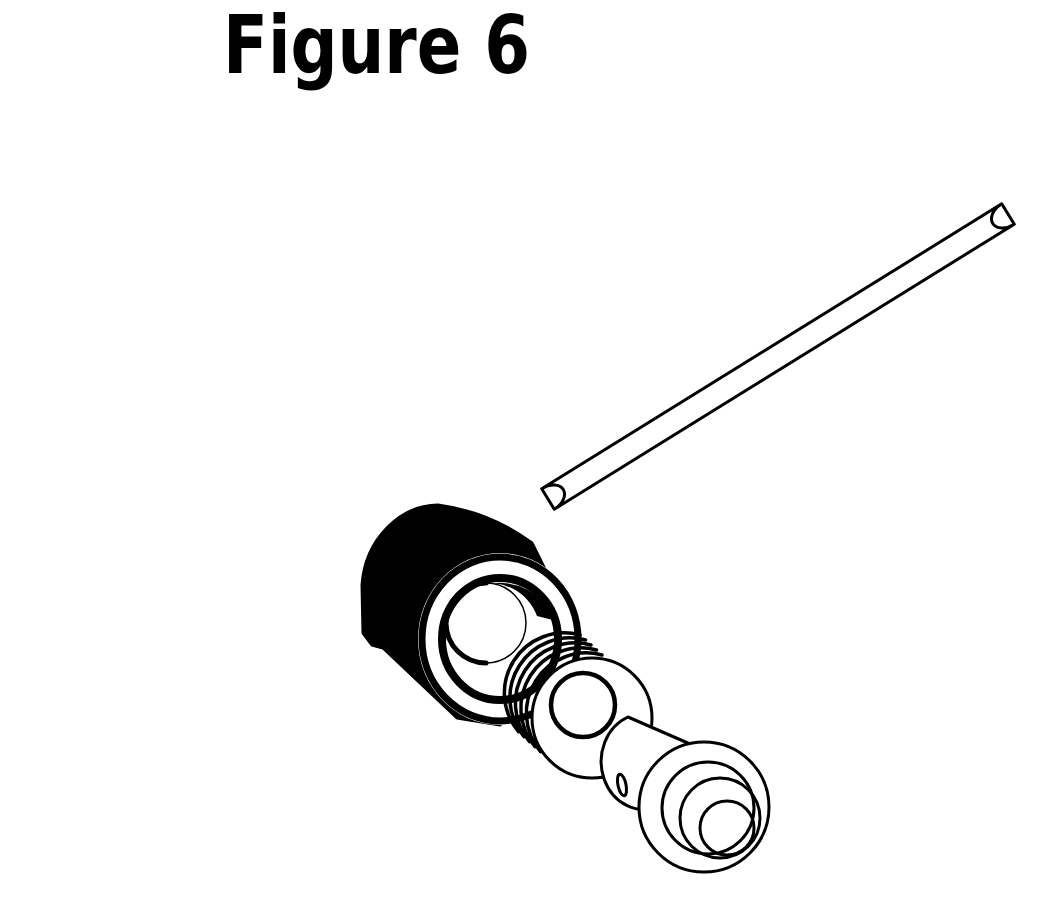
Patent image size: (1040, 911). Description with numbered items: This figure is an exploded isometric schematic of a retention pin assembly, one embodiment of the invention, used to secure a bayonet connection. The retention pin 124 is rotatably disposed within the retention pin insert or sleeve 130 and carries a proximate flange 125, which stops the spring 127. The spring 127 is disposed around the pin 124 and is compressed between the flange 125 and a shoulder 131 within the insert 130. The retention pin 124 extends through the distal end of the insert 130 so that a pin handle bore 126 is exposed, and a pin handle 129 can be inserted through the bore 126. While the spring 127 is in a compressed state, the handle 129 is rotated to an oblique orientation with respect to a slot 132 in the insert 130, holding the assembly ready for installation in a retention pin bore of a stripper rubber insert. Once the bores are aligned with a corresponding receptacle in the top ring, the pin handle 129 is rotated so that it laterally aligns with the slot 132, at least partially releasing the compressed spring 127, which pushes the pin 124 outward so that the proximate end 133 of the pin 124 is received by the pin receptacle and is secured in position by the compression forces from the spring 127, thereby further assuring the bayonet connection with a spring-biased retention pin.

The retention pin 124 is at (665, 737).
The proximate flange 125 is at (753, 770).
The pin handle bore 126 is at (618, 790).
The spring 127 is at (632, 667).
The pin handle 129 is at (767, 370).
The retention pin insert or sleeve 130 is at (532, 545).
The shoulder 131 is at (495, 657).
The slot 132 is at (380, 647).
The proximate end 133 is at (673, 810).